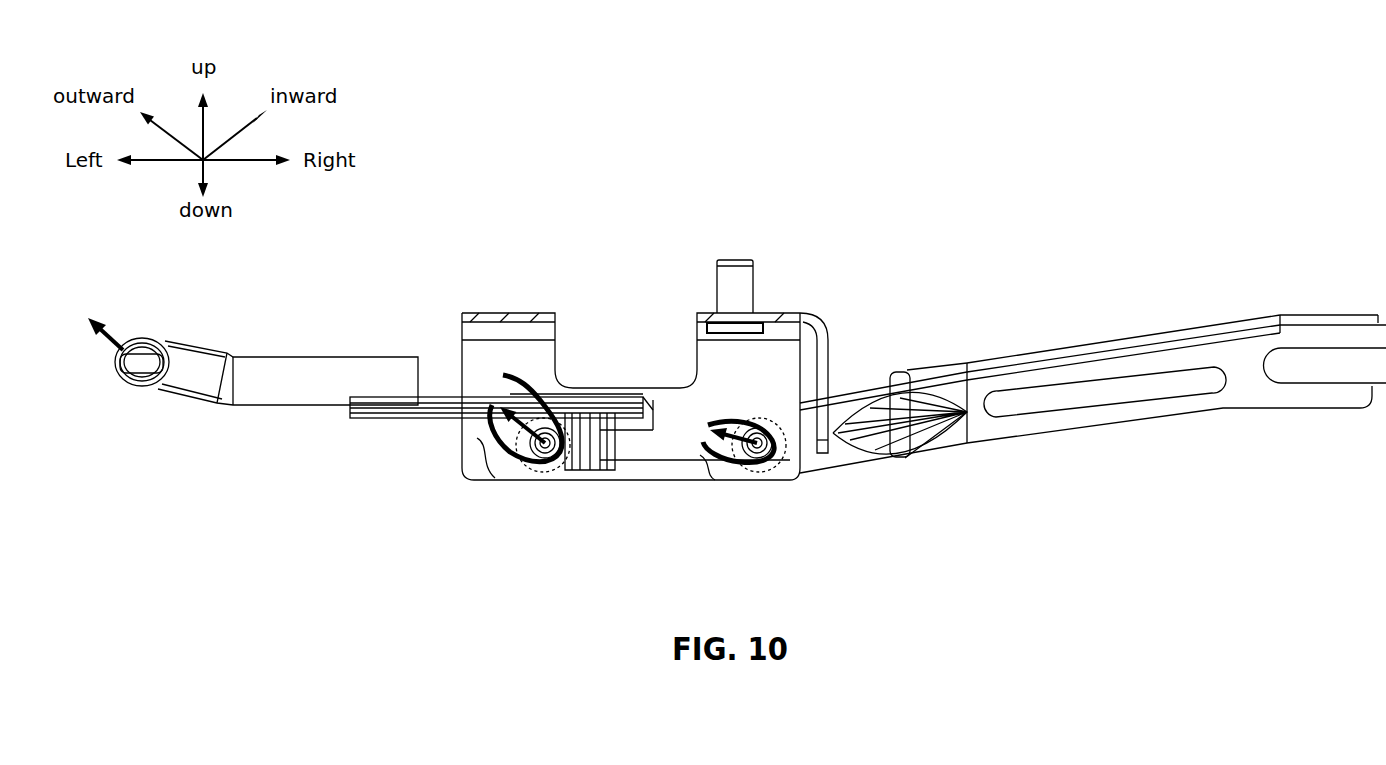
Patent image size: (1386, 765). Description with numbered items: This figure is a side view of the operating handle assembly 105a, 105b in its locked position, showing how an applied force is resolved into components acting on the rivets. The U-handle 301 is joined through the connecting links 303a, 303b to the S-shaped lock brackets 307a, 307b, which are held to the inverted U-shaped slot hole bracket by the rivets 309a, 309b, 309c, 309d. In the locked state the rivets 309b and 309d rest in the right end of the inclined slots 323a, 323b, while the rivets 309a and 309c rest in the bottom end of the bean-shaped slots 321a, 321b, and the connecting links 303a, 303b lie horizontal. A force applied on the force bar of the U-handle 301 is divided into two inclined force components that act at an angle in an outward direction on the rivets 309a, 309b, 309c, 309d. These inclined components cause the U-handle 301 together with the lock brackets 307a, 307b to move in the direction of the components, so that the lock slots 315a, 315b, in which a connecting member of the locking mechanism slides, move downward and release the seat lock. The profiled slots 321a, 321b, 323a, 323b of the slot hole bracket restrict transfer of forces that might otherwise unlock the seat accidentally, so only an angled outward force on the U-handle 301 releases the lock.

The operating handle assembly 105a is at (730, 321).
The operating handle assembly 105b is at (730, 336).
The U-handle 301 is at (113, 386).
The connecting link 303a is at (484, 452).
The connecting link 303b is at (350, 414).
The lock bracket 307a is at (1093, 434).
The lock bracket 307b is at (1093, 434).
The rivet 309a is at (556, 494).
The rivet 309b is at (776, 490).
The rivet 309c is at (556, 494).
The rivet 309d is at (722, 465).
The slot 315a is at (1325, 414).
The slot 315b is at (1325, 414).
The bean-shaped slot 321a is at (511, 489).
The bean-shaped slot 321b is at (514, 489).
The inclined slot 323a is at (741, 486).
The inclined slot 323b is at (743, 486).